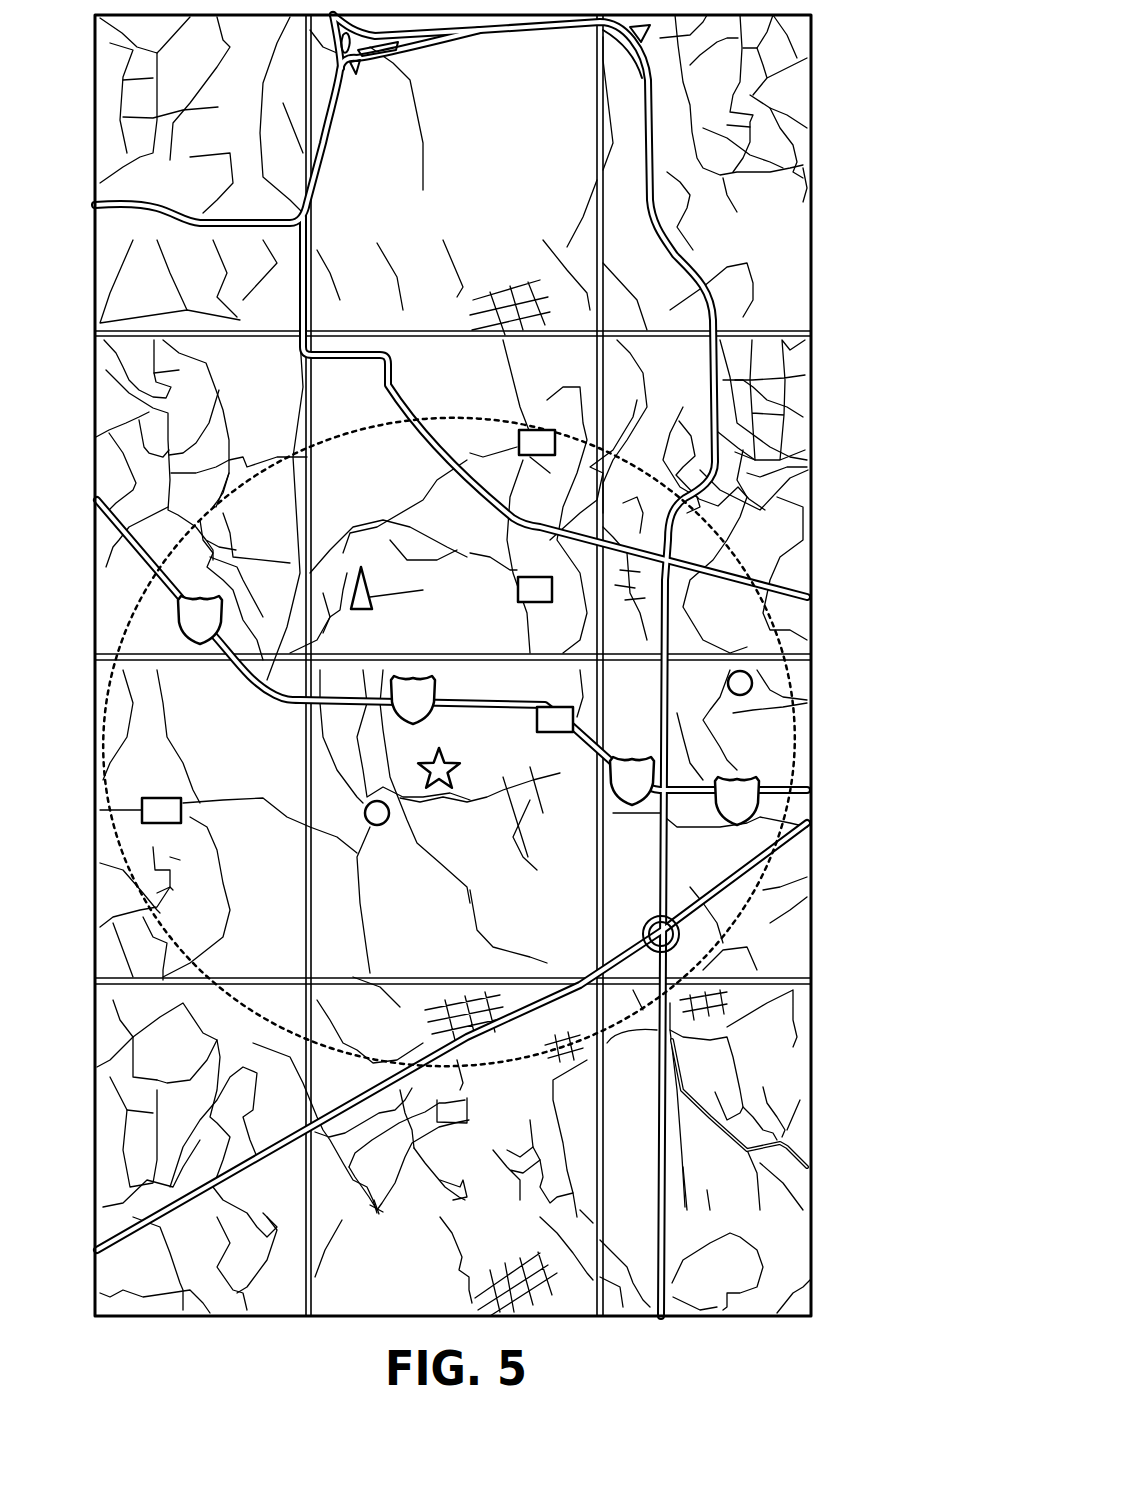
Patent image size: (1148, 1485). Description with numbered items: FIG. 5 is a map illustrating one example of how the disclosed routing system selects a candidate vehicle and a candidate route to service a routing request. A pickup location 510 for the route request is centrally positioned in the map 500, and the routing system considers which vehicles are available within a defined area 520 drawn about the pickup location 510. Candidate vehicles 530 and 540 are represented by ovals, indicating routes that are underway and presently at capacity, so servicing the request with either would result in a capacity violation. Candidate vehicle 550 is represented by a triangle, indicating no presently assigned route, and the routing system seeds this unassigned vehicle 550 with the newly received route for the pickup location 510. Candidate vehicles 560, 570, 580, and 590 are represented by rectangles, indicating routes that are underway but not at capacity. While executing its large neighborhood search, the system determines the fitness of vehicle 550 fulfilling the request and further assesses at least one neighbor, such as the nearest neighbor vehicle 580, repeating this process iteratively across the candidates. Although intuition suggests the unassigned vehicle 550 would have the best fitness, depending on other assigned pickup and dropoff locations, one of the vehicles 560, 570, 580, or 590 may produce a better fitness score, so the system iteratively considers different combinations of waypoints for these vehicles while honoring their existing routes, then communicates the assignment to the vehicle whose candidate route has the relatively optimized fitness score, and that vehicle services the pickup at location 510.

The map 500 is at (852, 112).
The pickup location 510 is at (443, 790).
The defined area 520 is at (700, 507).
The candidate vehicle 530 is at (378, 826).
The candidate vehicle 540 is at (742, 696).
The candidate vehicle 550 is at (361, 568).
The candidate vehicle 560 is at (172, 824).
The candidate vehicle 570 is at (553, 735).
The candidate vehicle 580 is at (518, 590).
The candidate vehicle 590 is at (536, 429).